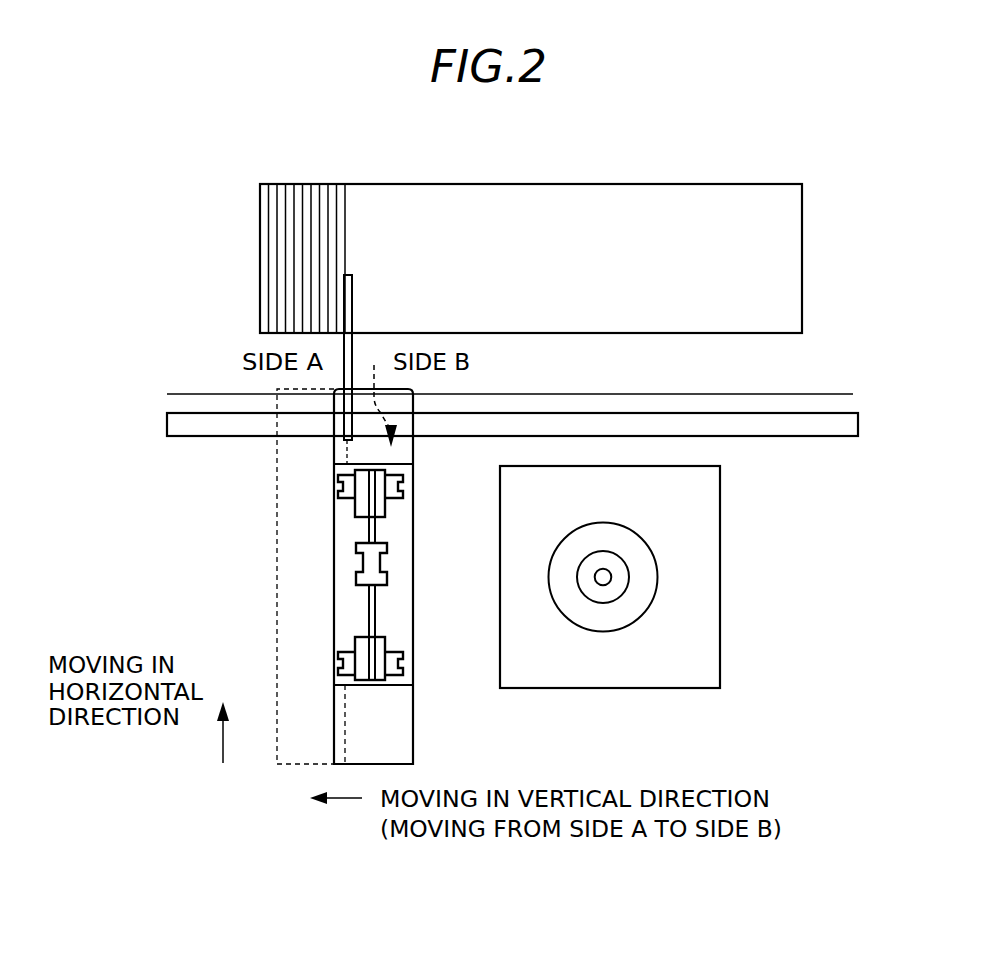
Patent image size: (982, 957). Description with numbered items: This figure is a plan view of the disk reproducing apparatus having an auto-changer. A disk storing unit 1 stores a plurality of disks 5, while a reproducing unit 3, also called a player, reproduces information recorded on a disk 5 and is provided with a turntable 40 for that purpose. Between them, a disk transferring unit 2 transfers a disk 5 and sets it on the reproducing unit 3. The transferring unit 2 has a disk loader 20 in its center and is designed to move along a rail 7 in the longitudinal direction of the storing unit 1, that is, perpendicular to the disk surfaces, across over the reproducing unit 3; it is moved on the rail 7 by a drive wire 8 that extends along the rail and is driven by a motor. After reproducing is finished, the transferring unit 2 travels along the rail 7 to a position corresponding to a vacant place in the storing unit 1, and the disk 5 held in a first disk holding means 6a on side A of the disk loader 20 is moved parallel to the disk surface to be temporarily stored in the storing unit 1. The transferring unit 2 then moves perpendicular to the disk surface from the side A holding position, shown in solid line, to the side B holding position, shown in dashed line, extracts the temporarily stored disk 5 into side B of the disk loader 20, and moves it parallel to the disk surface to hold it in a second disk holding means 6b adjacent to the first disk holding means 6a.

The disk storing unit 1 is at (417, 184).
The disk transferring unit 2 is at (403, 723).
The reproducing unit 3 is at (707, 507).
The disk 5 is at (353, 290).
The first disk holding means 6a is at (348, 500).
The second disk holding means 6b is at (398, 498).
The rail 7 is at (808, 430).
The drive wire 8 is at (180, 394).
The disk loader 20 is at (363, 612).
The turntable 40 is at (655, 592).